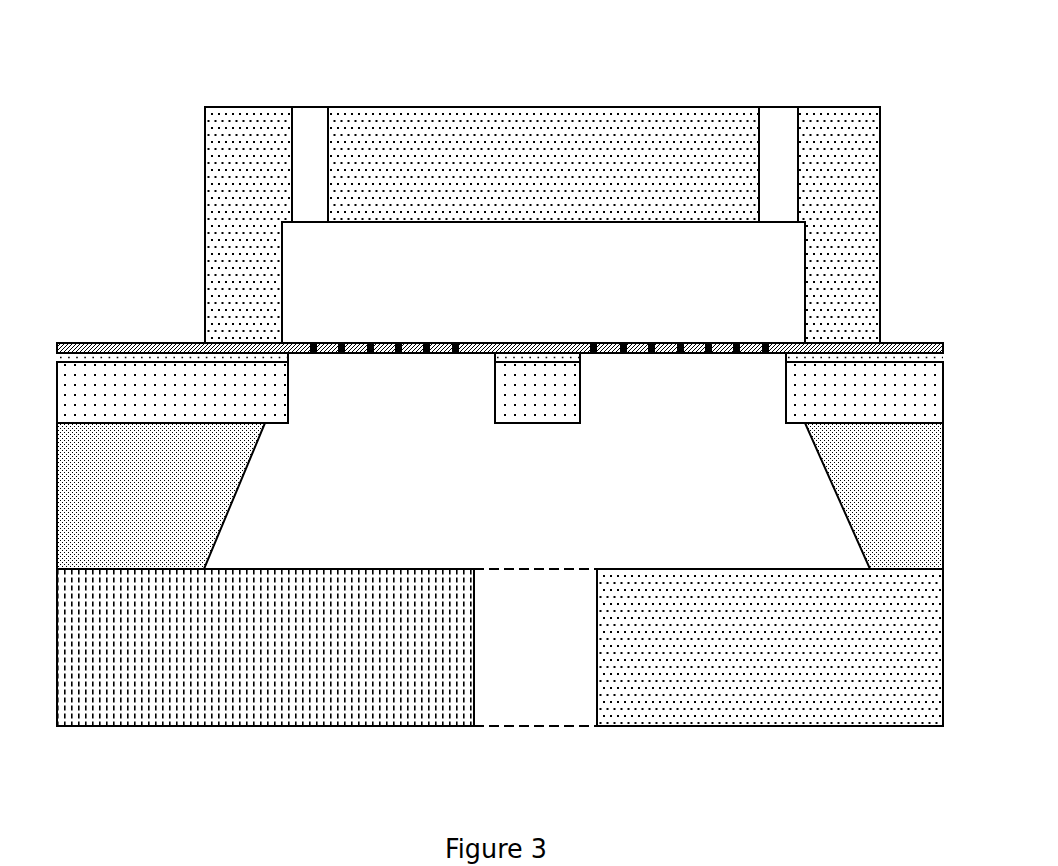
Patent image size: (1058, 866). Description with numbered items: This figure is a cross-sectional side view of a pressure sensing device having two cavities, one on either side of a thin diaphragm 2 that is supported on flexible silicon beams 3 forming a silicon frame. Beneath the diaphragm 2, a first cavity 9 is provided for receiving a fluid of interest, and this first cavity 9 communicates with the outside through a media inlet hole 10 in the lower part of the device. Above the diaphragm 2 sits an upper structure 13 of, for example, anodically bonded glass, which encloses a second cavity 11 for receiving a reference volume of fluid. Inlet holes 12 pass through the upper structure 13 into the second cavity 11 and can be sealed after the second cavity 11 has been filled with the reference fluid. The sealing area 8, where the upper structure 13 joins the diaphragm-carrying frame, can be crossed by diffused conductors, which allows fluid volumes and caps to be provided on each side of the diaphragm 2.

The thin diaphragm 2 is at (703, 345).
The flexible silicon beam 3 is at (112, 393).
The sealing area 8 is at (193, 332).
The first cavity 9 is at (342, 520).
The media inlet hole 10 is at (545, 699).
The second cavity 11 is at (432, 283).
The inlet holes 12 is at (305, 128).
The upper structure 13 is at (232, 273).